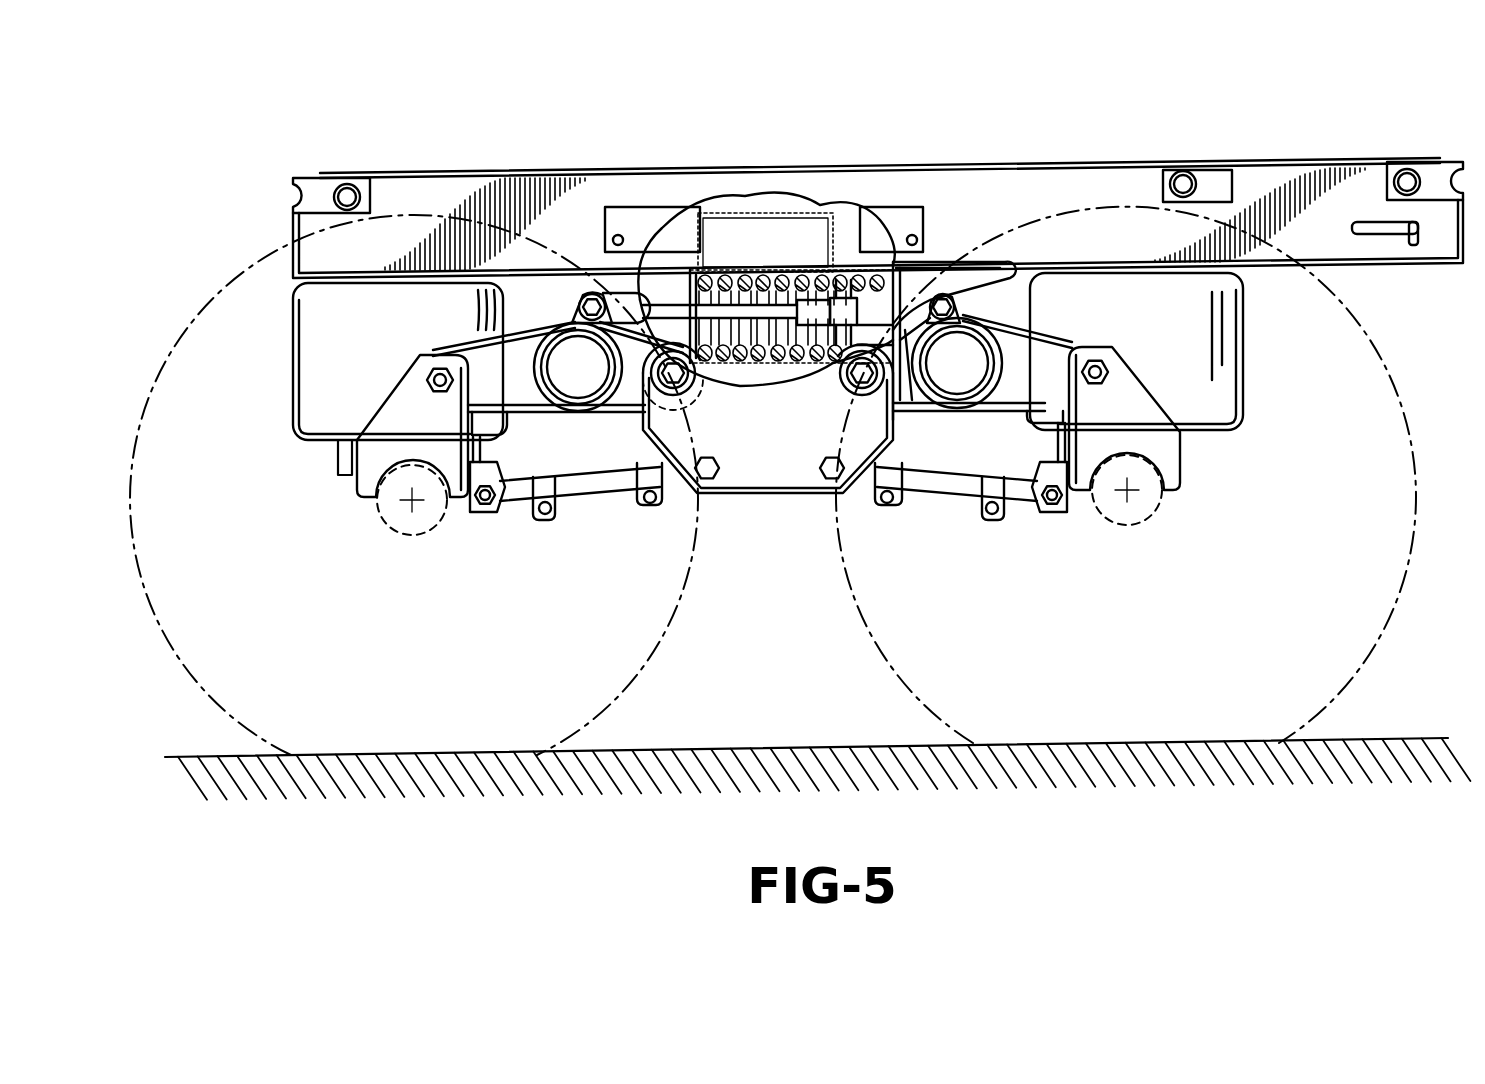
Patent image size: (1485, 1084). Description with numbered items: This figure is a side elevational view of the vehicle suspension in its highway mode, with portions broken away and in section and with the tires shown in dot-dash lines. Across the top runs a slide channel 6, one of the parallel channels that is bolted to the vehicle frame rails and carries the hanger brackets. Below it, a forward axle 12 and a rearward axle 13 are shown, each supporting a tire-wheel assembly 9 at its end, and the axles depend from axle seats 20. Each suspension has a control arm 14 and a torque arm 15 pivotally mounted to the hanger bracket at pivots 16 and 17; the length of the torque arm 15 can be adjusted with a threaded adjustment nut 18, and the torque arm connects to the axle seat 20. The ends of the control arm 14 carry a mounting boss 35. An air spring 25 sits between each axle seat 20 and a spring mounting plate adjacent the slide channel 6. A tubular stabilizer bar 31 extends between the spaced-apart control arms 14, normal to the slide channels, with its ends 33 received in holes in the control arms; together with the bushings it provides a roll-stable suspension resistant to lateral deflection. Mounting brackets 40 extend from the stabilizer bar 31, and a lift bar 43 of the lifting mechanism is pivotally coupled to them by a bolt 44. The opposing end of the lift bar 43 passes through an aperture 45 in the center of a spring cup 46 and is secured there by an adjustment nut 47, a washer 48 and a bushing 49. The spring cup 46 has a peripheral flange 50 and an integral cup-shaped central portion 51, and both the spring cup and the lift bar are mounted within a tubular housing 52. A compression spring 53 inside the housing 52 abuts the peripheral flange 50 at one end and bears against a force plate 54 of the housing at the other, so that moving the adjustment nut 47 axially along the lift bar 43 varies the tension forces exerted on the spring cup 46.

The slide channel 6 is at (1088, 185).
The tire-wheel assembly 9 is at (1355, 665).
The forward axle 12 is at (393, 530).
The rearward axle 13 is at (1150, 518).
The control arm 14 is at (487, 355).
The torque arm 15 is at (590, 485).
The pivot 16 is at (682, 380).
The pivot 17 is at (719, 468).
The threaded adjustment nut 18 is at (651, 505).
The axle seat 20 is at (345, 472).
The air spring 25 is at (310, 362).
The tubular stabilizer bar 31 is at (607, 400).
The end 33 is at (549, 398).
The mounting boss 35 is at (665, 378).
The mounting bracket 40 is at (595, 293).
The lift bar 43 is at (663, 303).
The bolt 44 is at (580, 307).
The aperture 45 is at (806, 320).
The spring cup 46 is at (930, 290).
The adjustment nut 47 is at (905, 345).
The washer 48 is at (852, 298).
The bushing 49 is at (855, 376).
The peripheral flange 50 is at (885, 330).
The cup-shaped central portion 51 is at (888, 335).
The tubular housing 52 is at (775, 366).
The compression spring 53 is at (728, 284).
The force plate 54 is at (692, 302).